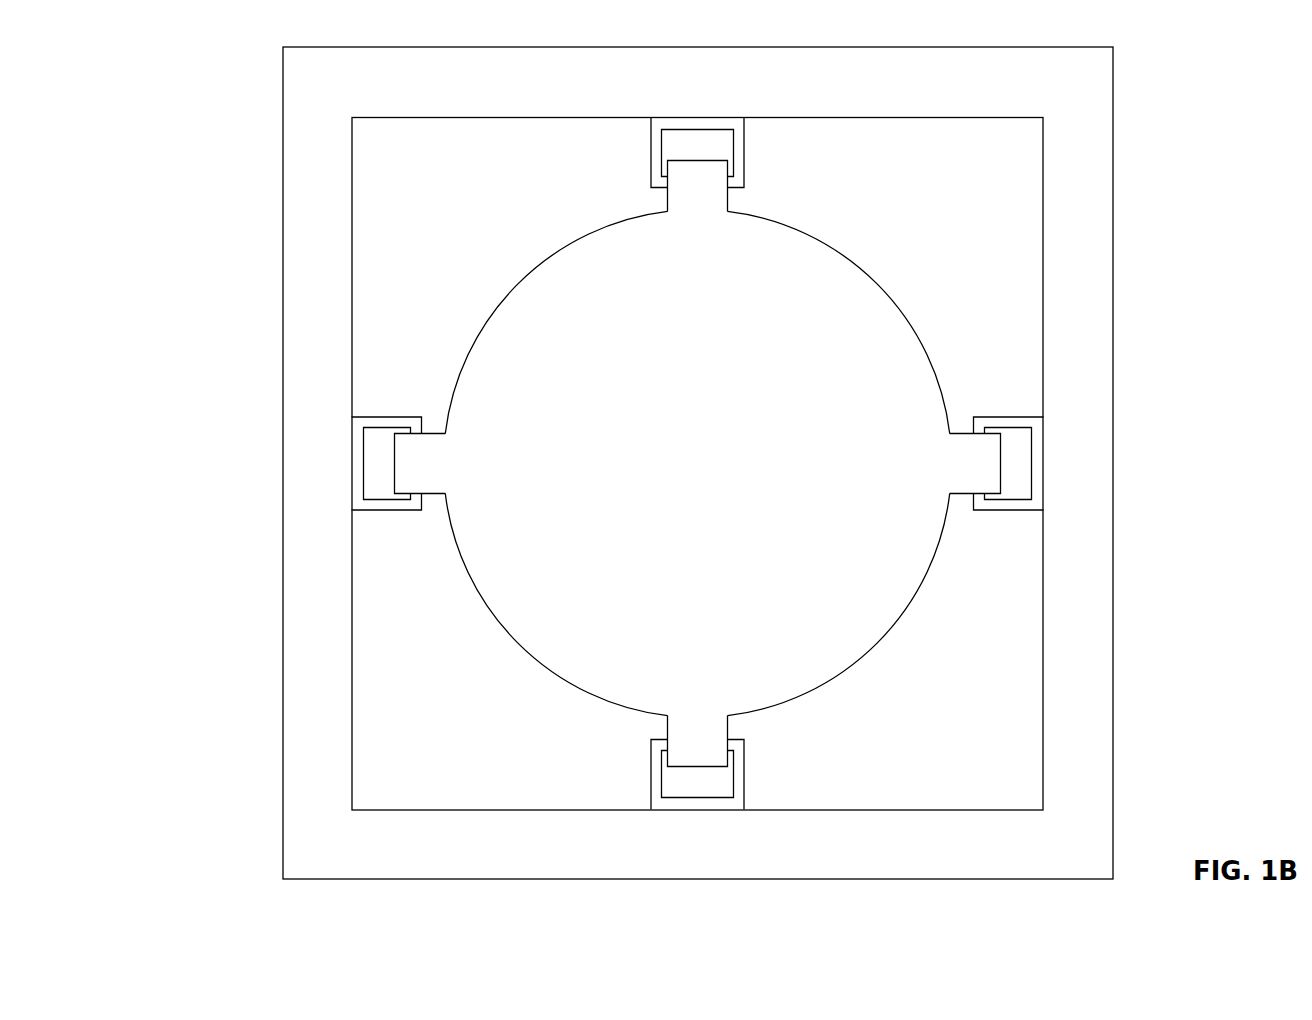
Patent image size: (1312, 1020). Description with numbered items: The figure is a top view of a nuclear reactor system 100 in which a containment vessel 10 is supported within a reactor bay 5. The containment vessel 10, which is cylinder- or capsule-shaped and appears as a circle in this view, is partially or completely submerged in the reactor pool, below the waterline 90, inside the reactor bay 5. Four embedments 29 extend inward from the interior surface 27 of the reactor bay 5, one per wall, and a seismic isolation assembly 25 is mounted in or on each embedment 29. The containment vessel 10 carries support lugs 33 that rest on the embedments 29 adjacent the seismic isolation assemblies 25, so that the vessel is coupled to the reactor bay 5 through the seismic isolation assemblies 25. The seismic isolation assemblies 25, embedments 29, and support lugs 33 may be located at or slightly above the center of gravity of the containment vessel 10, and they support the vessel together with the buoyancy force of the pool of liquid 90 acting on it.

The nuclear reactor system 100 is at (257, 34).
The reactor bay 5 is at (1114, 258).
The interior surface 27 is at (395, 129).
The containment vessel 10 is at (862, 265).
The support lugs 33 is at (733, 200).
The seismic isolation assembly 25 is at (737, 152).
The embedment 29 is at (651, 150).
The waterline 90 is at (906, 771).